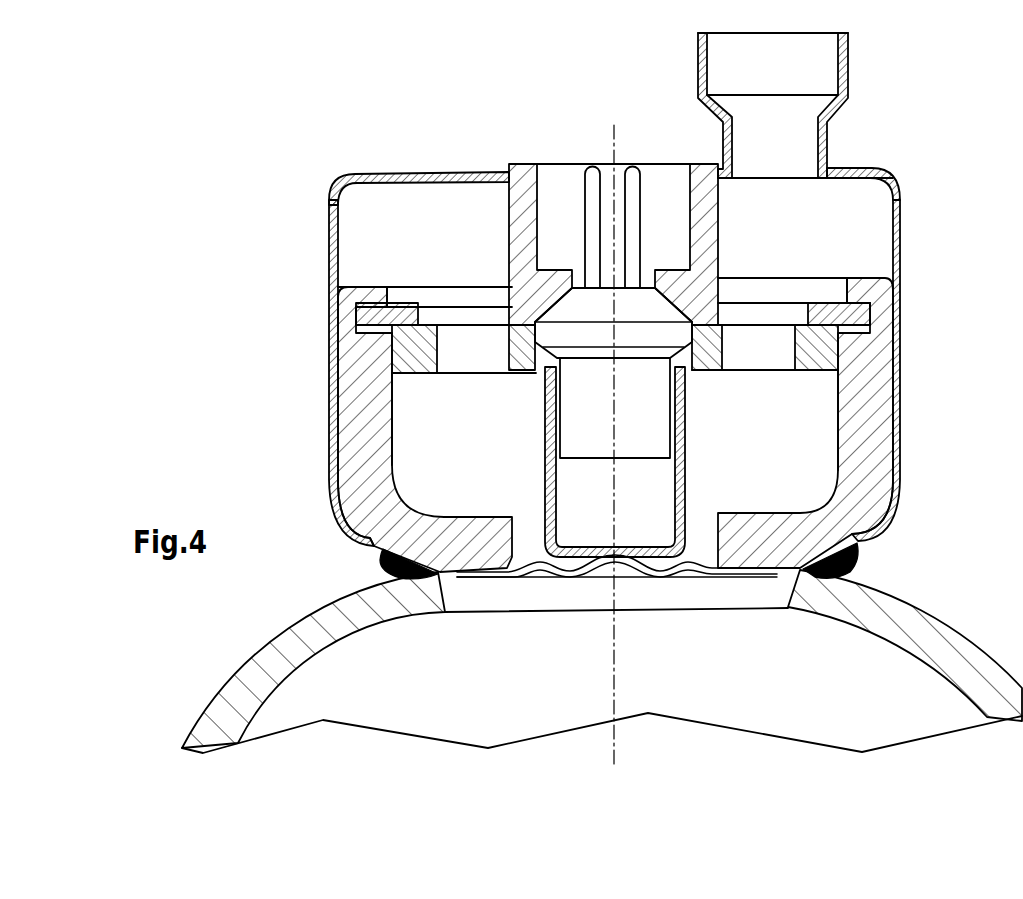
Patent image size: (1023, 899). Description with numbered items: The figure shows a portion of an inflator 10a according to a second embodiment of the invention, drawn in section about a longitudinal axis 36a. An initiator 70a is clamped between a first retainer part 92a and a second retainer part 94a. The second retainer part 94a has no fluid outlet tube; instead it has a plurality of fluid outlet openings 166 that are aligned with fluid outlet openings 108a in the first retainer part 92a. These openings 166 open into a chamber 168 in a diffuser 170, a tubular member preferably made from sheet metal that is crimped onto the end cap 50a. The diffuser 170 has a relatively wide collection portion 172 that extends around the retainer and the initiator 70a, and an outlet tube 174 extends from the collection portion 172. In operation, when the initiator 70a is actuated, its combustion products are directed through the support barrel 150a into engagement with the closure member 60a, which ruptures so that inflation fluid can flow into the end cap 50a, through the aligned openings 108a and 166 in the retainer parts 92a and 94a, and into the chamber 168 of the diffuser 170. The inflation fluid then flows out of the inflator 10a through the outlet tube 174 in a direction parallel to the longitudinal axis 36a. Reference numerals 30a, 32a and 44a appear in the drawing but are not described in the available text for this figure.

The inflator 10a is at (590, 359).
The tire 30a is at (219, 687).
The wheel rim 32a is at (266, 643).
The longitudinal axis 36a is at (617, 652).
The tire interior 44a is at (760, 680).
The end cap 50a is at (896, 460).
The closure member 60a is at (529, 583).
The initiator 70a is at (576, 203).
The first retainer part 92a is at (805, 375).
The second retainer part 94a is at (506, 239).
The fluid outlet openings 108a is at (466, 352).
The support barrel 150a is at (541, 470).
The fluid outlet openings 166 is at (465, 320).
The chamber 168 is at (795, 233).
The diffuser 170 is at (403, 172).
The collection portion 172 is at (328, 275).
The outlet tube 174 is at (849, 80).